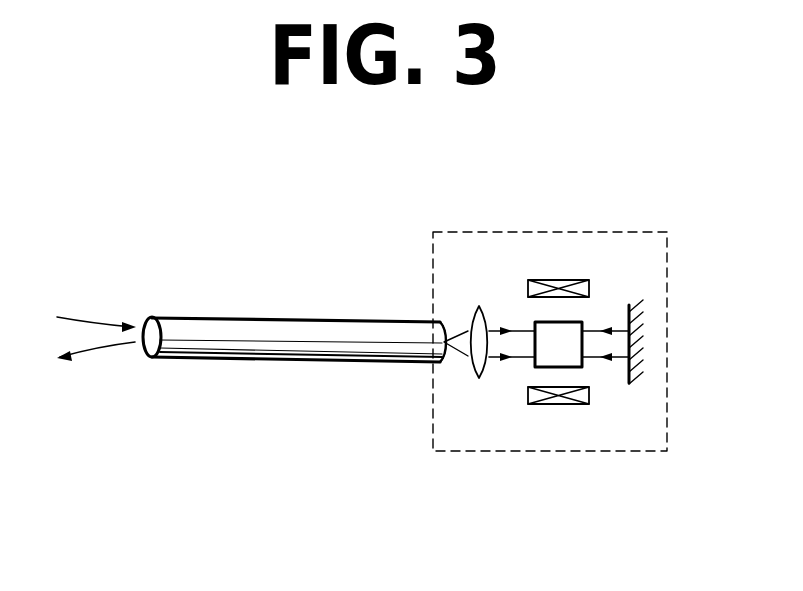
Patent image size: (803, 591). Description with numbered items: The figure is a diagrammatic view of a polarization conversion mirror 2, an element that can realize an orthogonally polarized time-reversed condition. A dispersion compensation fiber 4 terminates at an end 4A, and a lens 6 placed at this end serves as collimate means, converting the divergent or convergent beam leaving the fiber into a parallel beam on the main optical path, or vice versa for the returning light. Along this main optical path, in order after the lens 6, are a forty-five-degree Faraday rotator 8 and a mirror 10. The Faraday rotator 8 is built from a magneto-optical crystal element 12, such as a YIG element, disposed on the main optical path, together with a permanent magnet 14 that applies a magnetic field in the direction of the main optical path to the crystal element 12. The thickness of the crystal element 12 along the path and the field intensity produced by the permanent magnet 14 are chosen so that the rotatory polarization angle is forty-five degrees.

The polarization conversion mirror 2 is at (476, 231).
The dispersion compensation fiber 4 is at (228, 320).
The end of dispersion compensation fiber 4A is at (448, 322).
The lens 6 is at (478, 378).
The 45-degree Faraday rotator 8 is at (547, 420).
The mirror 10 is at (629, 310).
The magneto-optical crystal element 12 is at (528, 371).
The permanent magnet 14 is at (565, 280).